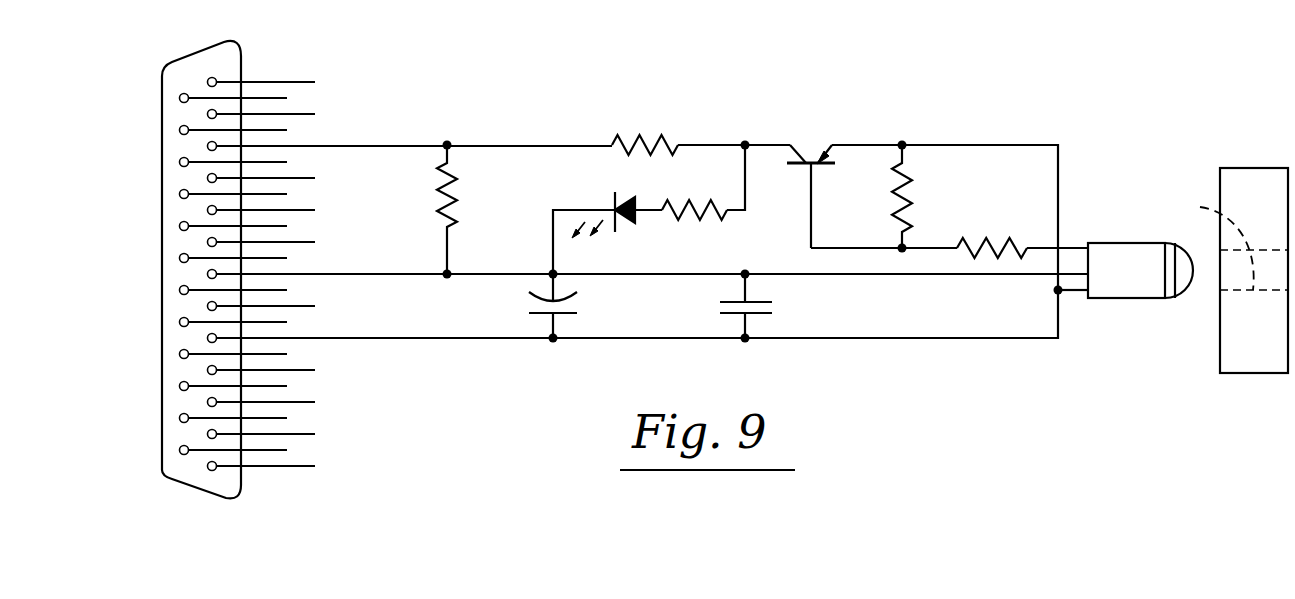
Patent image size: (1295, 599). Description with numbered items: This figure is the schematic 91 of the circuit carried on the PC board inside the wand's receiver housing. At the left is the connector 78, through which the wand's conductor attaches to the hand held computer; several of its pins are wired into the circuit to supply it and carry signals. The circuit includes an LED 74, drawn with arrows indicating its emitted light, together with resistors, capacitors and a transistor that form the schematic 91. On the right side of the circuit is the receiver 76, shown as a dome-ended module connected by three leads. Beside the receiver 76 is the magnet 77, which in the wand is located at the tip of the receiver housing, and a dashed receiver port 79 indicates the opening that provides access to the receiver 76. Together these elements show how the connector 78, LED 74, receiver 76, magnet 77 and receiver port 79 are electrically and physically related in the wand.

The LED 74 is at (629, 223).
The receiver 76 is at (1182, 282).
The magnet 77 is at (1250, 180).
The connector 78 is at (252, 49).
The receiver port 79 is at (1200, 207).
The schematic 91 is at (829, 120).